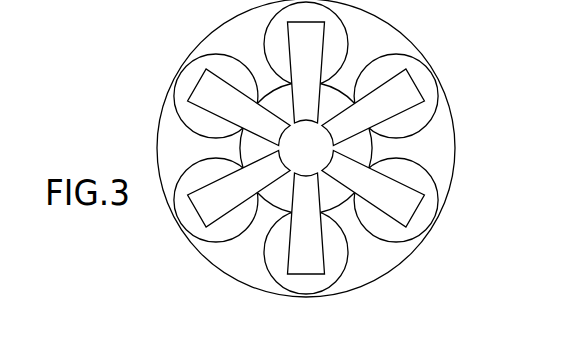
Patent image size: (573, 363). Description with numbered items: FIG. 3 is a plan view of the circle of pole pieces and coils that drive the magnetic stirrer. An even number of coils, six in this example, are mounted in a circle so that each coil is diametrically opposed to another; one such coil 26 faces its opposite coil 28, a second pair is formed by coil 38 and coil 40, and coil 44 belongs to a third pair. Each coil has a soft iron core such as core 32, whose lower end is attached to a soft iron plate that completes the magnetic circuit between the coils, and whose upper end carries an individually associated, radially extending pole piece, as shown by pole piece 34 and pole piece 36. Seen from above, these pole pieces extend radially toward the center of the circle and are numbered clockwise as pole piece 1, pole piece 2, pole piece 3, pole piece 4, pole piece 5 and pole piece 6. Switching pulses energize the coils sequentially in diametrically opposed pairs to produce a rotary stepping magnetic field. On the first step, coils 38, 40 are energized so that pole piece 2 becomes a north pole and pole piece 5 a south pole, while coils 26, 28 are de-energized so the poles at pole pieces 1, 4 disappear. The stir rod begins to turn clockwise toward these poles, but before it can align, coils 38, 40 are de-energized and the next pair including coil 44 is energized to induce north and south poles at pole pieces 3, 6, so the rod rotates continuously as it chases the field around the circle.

The pole piece 1 is at (373, 107).
The pole piece 2 is at (373, 189).
The pole piece 3 is at (306, 223).
The pole piece 4 is at (239, 189).
The pole piece 5 is at (239, 107).
The pole piece 6 is at (306, 72).
The coil 26 is at (188, 220).
The coil 28 is at (440, 84).
The soft iron core 32 is at (284, 148).
The pole piece 34 is at (231, 221).
The pole piece 36 is at (398, 80).
The coil 38 is at (180, 72).
The coil 40 is at (436, 198).
The coil 44 is at (382, 278).